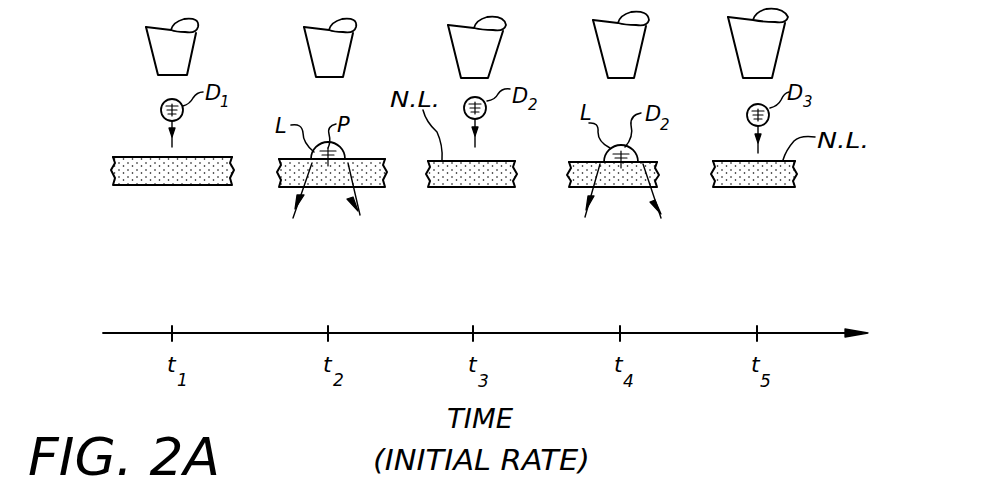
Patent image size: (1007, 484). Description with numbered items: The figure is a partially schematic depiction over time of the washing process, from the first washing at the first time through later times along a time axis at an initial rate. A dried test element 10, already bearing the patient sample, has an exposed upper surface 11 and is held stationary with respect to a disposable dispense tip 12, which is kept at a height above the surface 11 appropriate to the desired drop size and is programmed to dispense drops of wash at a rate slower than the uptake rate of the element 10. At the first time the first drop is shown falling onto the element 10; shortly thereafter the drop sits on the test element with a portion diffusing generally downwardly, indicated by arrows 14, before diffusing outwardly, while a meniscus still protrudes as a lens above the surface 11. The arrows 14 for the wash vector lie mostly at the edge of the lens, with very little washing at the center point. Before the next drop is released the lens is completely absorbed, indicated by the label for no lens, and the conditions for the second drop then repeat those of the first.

The test element 10 is at (170, 186).
The exposed upper surface 11 is at (131, 156).
The dispense tip 12 is at (198, 35).
The arrows 14 is at (304, 196).